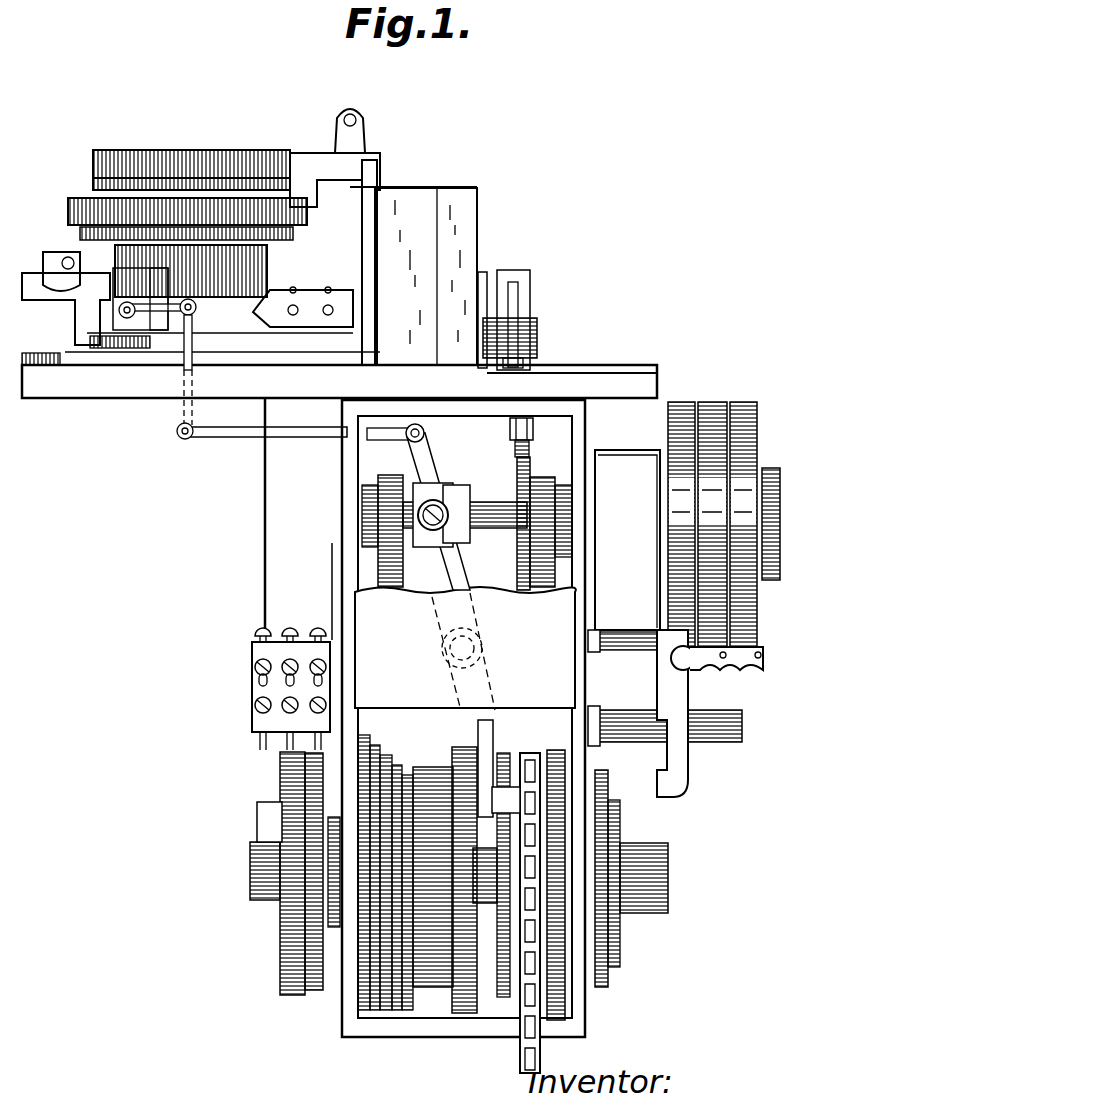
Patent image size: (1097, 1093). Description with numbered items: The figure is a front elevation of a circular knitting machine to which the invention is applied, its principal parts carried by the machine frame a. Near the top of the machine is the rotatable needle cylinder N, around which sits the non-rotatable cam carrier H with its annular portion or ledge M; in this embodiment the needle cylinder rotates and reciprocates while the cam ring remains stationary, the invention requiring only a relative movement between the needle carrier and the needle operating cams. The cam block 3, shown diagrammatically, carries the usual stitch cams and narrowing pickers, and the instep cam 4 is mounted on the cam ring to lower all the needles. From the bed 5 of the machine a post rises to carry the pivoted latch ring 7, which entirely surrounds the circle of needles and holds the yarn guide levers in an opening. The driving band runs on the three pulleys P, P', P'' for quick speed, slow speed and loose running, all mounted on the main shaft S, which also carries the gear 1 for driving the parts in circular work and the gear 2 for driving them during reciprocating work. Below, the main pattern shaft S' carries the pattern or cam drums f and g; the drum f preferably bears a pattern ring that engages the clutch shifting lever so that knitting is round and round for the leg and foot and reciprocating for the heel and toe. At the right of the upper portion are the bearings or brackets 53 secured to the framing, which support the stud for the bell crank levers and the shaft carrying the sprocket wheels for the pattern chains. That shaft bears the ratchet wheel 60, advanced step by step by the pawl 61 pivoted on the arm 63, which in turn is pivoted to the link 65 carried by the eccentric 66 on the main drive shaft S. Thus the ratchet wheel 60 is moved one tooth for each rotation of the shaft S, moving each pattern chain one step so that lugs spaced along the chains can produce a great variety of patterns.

The latch ring 7 is at (157, 160).
The needle cylinder N is at (245, 260).
The cam carrier H is at (82, 252).
The cam block 3 is at (268, 314).
The annular portion of the cam carrier M is at (186, 299).
The instep cam 4 is at (160, 330).
The bearings 53 is at (483, 275).
The pawl 61 is at (515, 300).
The ratchet wheel 60 is at (505, 332).
The arm 63 is at (512, 361).
The bed 5 is at (600, 384).
The quick speed pulley P is at (681, 507).
The slow speed pulley P' is at (712, 507).
The loose pulley P'' is at (744, 507).
The machine frame a is at (345, 470).
The gear for reciprocating work 2 is at (393, 560).
The main shaft S is at (465, 510).
The gear for circular work 1 is at (548, 595).
The link 65 is at (530, 433).
The eccentric 66 is at (529, 460).
The pattern drum g is at (357, 990).
The pattern drum f is at (460, 1010).
The main pattern shaft S' is at (461, 861).